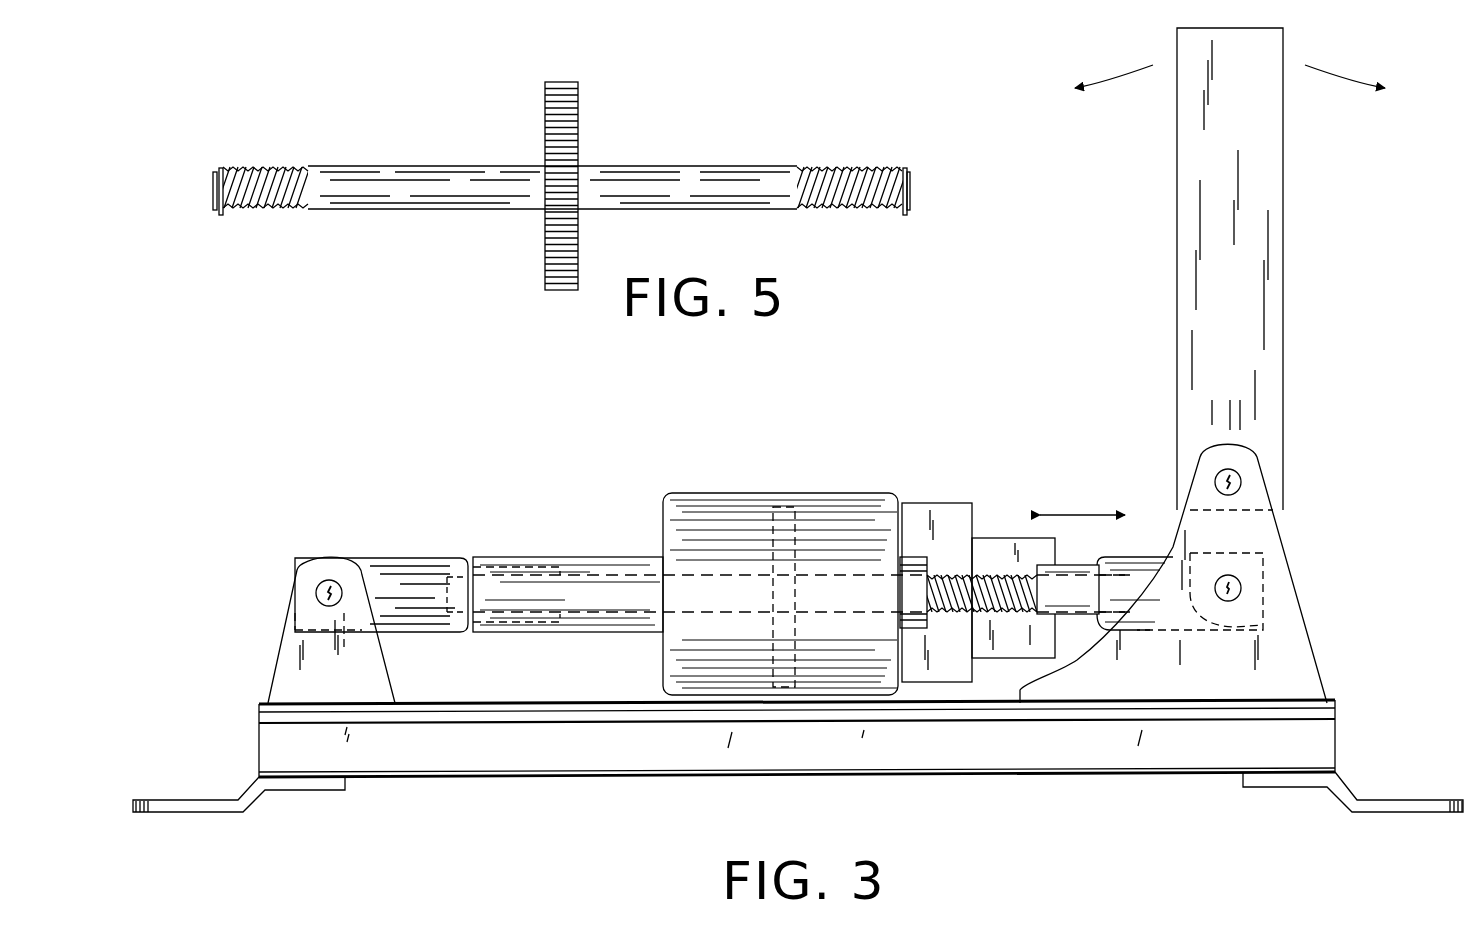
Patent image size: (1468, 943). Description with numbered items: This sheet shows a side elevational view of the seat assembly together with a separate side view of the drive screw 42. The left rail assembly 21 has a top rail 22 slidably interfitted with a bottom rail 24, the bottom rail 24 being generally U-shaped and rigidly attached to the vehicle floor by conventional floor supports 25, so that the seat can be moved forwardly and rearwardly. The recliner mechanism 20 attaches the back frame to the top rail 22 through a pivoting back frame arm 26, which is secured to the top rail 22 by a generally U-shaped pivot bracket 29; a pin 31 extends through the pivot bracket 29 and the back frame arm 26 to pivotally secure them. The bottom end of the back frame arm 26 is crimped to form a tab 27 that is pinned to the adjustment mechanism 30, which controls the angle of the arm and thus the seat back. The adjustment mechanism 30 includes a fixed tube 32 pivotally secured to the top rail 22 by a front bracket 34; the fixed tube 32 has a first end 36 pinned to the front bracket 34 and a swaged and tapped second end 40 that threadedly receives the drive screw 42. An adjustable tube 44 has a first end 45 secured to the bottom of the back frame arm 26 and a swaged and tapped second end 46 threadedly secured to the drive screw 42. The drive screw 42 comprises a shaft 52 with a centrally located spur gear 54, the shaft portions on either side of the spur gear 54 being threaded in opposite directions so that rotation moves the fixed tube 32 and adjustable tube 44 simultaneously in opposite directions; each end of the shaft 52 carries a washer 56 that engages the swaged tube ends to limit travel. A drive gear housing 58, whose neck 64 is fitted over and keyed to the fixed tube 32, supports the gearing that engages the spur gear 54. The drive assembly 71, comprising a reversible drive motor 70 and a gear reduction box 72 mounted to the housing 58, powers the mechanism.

In FIG. 3, the recliner mechanism 20 is at (378, 475).
In FIG. 3, the left rail assembly 21 is at (798, 764).
In FIG. 3, the top rail 22 is at (479, 703).
In FIG. 3, the bottom rail 24 is at (657, 777).
In FIG. 3, the floor supports 25 is at (170, 798).
In FIG. 3, the back frame arm 26 is at (1282, 230).
In FIG. 3, the tab 27 is at (1198, 563).
In FIG. 3, the pivot bracket 29 is at (1305, 620).
In FIG. 3, the adjustment mechanism 30 is at (817, 564).
In FIG. 3, the pin 31 is at (1235, 473).
In FIG. 3, the fixed tube 32 is at (383, 553).
In FIG. 3, the front bracket 34 is at (298, 594).
In FIG. 3, the first end 36 is at (298, 553).
In FIG. 3, the second end 40 is at (505, 565).
In FIG. 5, the drive screw 42 is at (655, 100).
In FIG. 3, the drive screw 42 is at (688, 577).
In FIG. 3, the adjustable tube 44 is at (1147, 557).
In FIG. 3, the first end 45 is at (1215, 622).
In FIG. 3, the second end 46 is at (1065, 617).
In FIG. 5, the shaft 52 is at (683, 163).
In FIG. 3, the shaft 52 is at (801, 593).
In FIG. 5, the spur gear 54 is at (545, 108).
In FIG. 3, the spur gear 54 is at (773, 520).
In FIG. 5, the washer 56 is at (222, 170).
In FIG. 3, the drive gear housing 58 is at (853, 490).
In FIG. 3, the neck 64 is at (587, 557).
In FIG. 3, the drive motor 70 is at (922, 500).
In FIG. 3, the drive assembly 71 is at (988, 480).
In FIG. 3, the gear reduction box 72 is at (1000, 537).